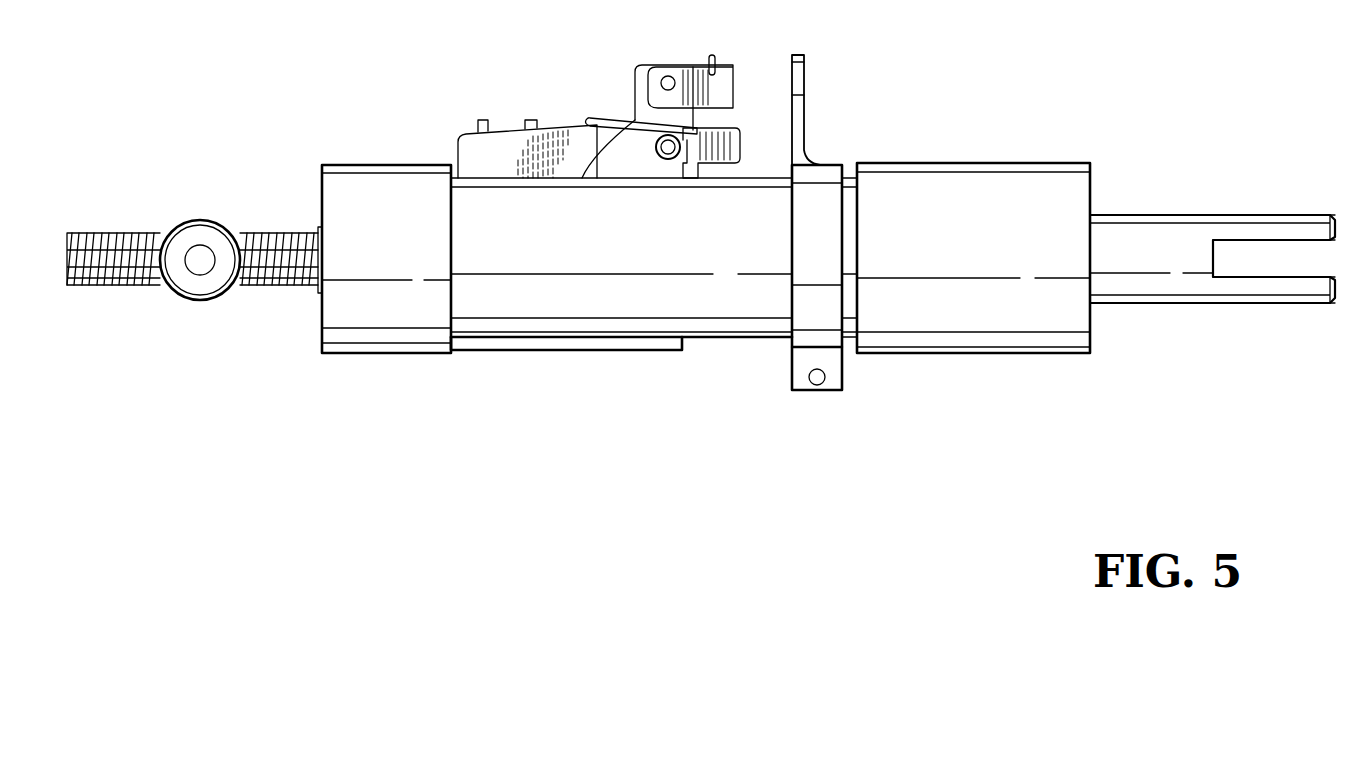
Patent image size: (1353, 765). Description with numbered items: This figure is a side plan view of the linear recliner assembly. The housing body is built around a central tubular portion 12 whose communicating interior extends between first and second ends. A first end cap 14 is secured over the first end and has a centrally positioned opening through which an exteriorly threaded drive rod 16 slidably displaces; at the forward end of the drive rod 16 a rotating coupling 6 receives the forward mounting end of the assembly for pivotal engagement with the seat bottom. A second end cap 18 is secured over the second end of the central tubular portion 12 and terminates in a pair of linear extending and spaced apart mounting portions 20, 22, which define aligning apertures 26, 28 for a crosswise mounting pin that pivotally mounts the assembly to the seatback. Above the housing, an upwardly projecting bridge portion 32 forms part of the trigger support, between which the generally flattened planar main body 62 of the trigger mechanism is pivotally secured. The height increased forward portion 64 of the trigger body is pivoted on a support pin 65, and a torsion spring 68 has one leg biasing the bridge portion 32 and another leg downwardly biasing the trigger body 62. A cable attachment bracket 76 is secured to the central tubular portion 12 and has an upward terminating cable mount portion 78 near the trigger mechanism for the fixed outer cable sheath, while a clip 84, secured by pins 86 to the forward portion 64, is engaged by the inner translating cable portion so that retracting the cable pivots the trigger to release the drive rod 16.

The rotating coupling 6 is at (203, 238).
The central tubular portion 12 is at (631, 307).
The first end cap 14 is at (370, 338).
The drive rod 16 is at (95, 290).
The second end cap 18 is at (952, 180).
The mounting portion 20 is at (1208, 215).
The mounting portion 22 is at (1175, 303).
The aligning aperture 26 is at (1280, 217).
The aligning aperture 28 is at (1290, 303).
The bridge portion 32 is at (730, 135).
The main body of trigger mechanism 62 is at (520, 152).
The forward portion 64 is at (635, 80).
The support pin 65 is at (668, 159).
The torsion spring 68 is at (655, 150).
The cable attachment bracket 76 is at (828, 307).
The cable mount portion 78 is at (805, 82).
The clip 84 is at (712, 68).
The pin 86 is at (666, 80).